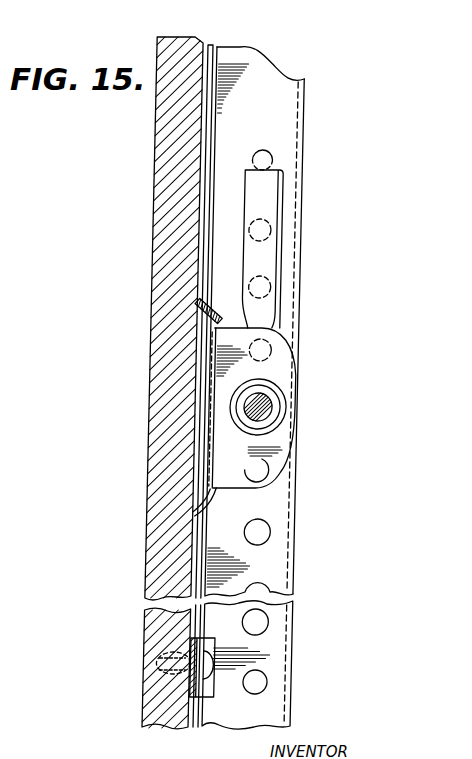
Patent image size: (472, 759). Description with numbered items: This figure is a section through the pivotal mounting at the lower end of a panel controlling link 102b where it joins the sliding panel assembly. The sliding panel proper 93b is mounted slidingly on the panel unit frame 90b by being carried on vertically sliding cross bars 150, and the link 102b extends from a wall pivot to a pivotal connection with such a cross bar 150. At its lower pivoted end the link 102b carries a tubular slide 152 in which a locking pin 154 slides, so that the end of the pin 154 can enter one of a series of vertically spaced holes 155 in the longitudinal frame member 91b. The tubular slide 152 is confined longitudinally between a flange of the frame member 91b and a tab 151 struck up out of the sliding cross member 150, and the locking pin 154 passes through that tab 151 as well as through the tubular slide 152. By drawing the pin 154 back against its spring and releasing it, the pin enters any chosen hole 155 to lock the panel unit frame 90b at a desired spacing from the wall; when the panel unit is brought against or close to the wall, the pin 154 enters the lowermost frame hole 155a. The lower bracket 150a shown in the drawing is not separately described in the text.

The sliding panel proper 93b is at (145, 632).
The longitudinal frame member 91b is at (268, 125).
The panel unit frame 90b is at (302, 457).
The vertically spaced holes 155 is at (273, 157).
The lowermost frame hole 155a is at (264, 680).
The panel controlling link 102b is at (284, 203).
The tab 151 is at (288, 365).
The sliding cross bar 150 is at (213, 505).
The tubular slide 152 is at (290, 400).
The locking pin 154 is at (264, 412).
The lower bracket 150a is at (144, 700).